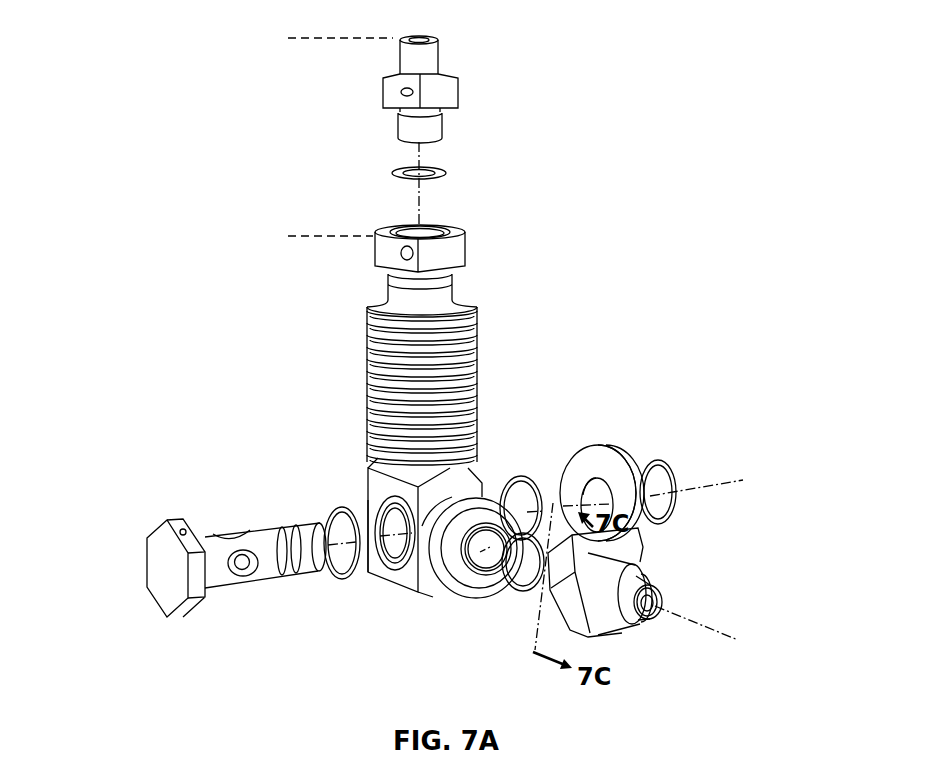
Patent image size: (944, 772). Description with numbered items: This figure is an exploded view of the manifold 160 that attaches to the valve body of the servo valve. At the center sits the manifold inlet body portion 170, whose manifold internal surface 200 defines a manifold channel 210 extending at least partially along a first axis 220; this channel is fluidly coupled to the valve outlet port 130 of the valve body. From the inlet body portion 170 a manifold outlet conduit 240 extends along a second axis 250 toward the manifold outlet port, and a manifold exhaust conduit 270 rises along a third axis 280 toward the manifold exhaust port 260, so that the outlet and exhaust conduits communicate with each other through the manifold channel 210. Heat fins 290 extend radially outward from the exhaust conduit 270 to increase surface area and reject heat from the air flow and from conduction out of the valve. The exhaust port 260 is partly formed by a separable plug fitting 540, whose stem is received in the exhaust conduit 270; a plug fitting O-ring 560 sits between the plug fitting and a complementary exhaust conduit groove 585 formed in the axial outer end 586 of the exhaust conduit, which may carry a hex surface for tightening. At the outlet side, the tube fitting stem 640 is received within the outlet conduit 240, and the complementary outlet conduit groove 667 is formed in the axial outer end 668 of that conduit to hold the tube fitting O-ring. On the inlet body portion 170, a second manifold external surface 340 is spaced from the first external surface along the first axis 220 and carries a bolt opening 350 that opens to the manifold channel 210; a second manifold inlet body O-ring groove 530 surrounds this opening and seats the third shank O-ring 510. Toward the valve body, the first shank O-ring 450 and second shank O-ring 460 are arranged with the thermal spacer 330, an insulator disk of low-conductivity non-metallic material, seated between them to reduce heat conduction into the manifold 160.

The manifold 160 is at (363, 26).
The manifold exhaust port 260 is at (288, 38).
The plug fitting 540 is at (459, 85).
The third axis 280 is at (418, 200).
The plug fitting O-ring 560 is at (445, 172).
The exhaust conduit groove 585 is at (445, 228).
The axial outer end of the manifold exhaust conduit 586 is at (430, 222).
The manifold exhaust conduit 270 is at (388, 282).
The heat fins 290 is at (367, 360).
The valve outlet port 130 is at (424, 644).
The manifold inlet body portion 170 is at (473, 463).
The second manifold inlet body O-ring groove 530 is at (377, 573).
The second manifold external surface 340 is at (372, 512).
The bolt opening 350 is at (387, 535).
The manifold outlet conduit 240 is at (393, 575).
The manifold channel 210 is at (364, 533).
The axial outer end of the manifold outlet conduit 668 is at (492, 590).
The outlet conduit groove 667 is at (475, 572).
The third shank O-ring 510 is at (343, 580).
The manifold internal surface 200 is at (335, 588).
The first shank O-ring 450 is at (532, 477).
The thermal spacer 330 is at (602, 446).
The second shank O-ring 460 is at (668, 460).
The first axis 220 is at (742, 482).
The tube fitting stem 640 is at (516, 598).
The second axis 250 is at (690, 622).